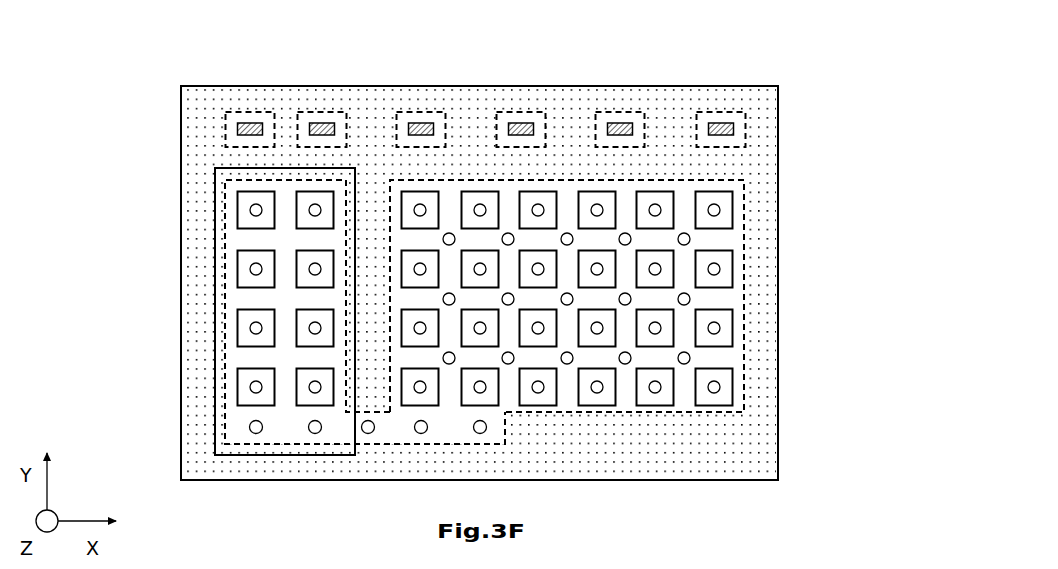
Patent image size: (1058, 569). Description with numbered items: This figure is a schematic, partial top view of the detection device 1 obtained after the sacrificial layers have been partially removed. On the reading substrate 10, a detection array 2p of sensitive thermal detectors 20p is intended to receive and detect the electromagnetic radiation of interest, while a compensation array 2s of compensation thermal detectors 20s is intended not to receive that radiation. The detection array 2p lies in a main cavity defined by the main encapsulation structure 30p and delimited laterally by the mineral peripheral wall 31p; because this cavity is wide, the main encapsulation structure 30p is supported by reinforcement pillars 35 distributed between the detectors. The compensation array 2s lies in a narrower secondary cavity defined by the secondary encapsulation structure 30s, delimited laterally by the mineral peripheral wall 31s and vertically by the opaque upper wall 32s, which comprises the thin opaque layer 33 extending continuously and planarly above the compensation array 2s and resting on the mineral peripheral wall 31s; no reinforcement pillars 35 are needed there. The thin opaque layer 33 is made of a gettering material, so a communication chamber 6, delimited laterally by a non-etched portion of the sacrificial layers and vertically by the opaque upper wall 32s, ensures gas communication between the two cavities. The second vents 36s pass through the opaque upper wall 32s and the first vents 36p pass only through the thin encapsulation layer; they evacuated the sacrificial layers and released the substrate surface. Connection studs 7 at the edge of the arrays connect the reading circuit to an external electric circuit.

The detection device 1 is at (150, 76).
The connection studs 7 is at (720, 120).
The compensation thermal detectors 20s is at (237, 210).
The compensation array 2s is at (237, 268).
The thin opaque layer 33 is at (212, 303).
The opaque upper wall 32s is at (212, 342).
The reinforcement pillars 35 is at (693, 239).
The reading substrate 10 is at (781, 258).
The sensitive thermal detectors 20p is at (735, 327).
The detection array 2p is at (741, 342).
The secondary encapsulation structure 30s is at (222, 473).
The mineral peripheral wall 31s is at (277, 473).
The second vents 36s is at (259, 436).
The communication chamber 6 is at (248, 351).
The first vents 36p is at (421, 436).
The main encapsulation structure 30p is at (582, 462).
The mineral peripheral wall 31p is at (628, 462).